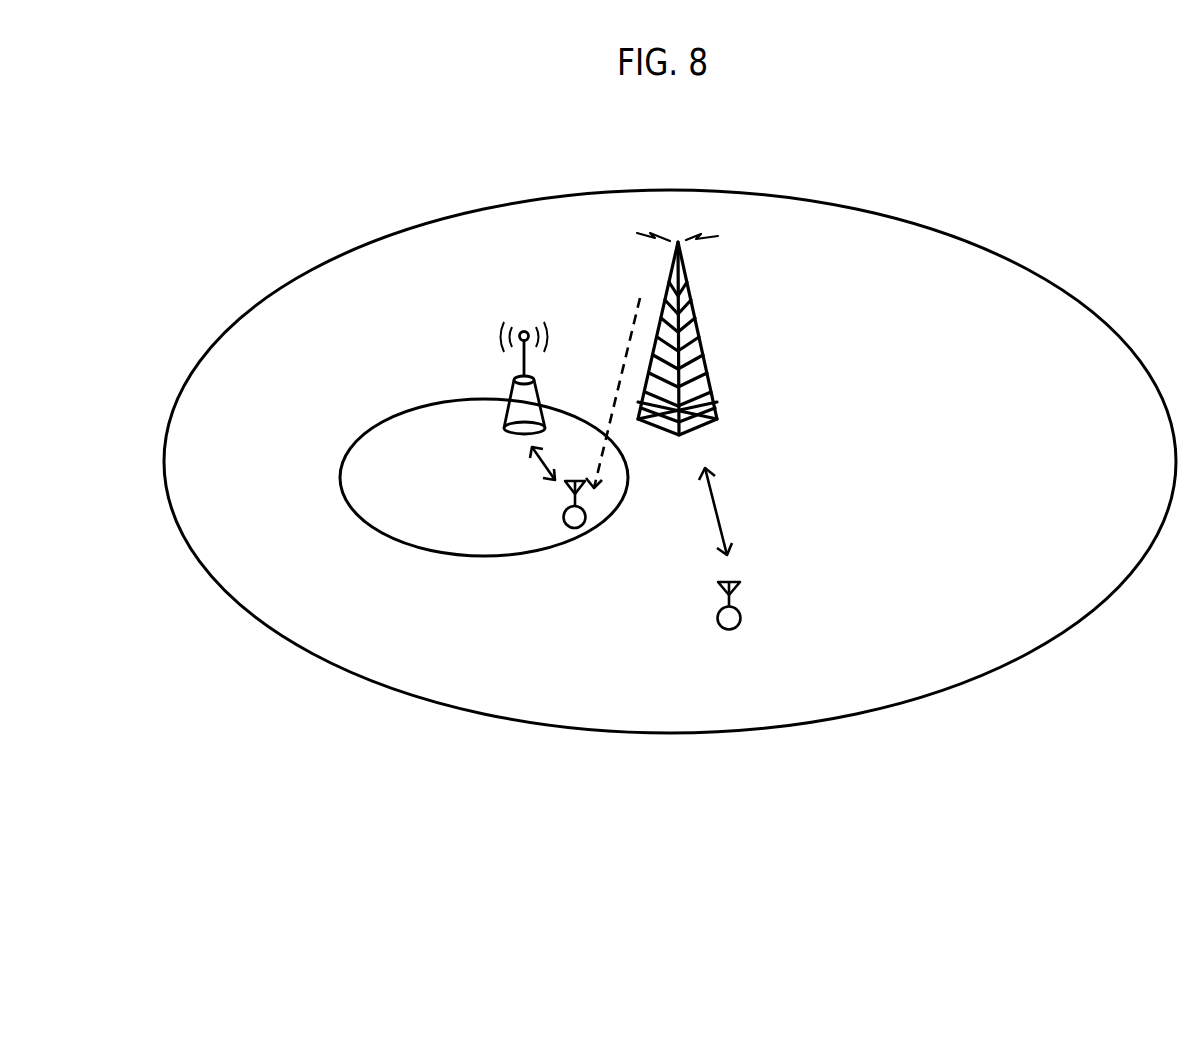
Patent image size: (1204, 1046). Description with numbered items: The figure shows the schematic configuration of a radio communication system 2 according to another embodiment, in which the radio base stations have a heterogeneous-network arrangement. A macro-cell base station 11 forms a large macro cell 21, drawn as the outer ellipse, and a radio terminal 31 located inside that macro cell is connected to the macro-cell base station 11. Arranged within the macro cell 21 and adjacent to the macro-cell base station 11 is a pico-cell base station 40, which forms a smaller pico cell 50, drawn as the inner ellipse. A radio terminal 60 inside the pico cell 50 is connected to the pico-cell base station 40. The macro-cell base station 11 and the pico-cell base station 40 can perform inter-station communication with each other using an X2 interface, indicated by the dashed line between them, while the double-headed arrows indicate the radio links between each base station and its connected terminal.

The radio communication system 2 is at (701, 145).
The macro cell 21 is at (283, 285).
The macro-cell base station 11 is at (697, 318).
The pico-cell base station 40 is at (514, 386).
The pico cell 50 is at (370, 433).
The radio terminal 60 is at (562, 521).
The radio terminal 31 is at (741, 617).